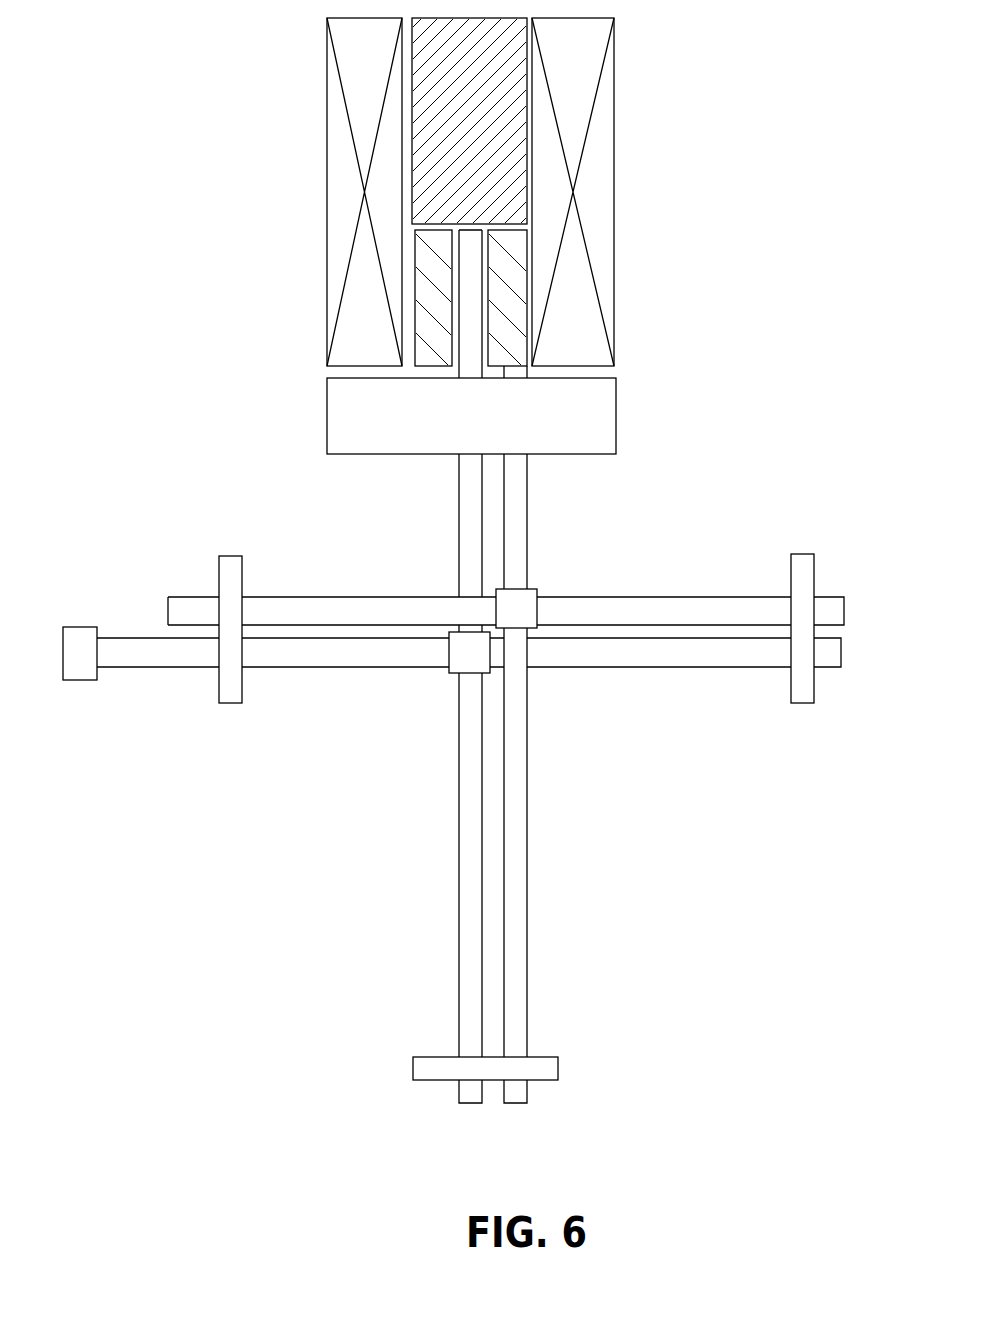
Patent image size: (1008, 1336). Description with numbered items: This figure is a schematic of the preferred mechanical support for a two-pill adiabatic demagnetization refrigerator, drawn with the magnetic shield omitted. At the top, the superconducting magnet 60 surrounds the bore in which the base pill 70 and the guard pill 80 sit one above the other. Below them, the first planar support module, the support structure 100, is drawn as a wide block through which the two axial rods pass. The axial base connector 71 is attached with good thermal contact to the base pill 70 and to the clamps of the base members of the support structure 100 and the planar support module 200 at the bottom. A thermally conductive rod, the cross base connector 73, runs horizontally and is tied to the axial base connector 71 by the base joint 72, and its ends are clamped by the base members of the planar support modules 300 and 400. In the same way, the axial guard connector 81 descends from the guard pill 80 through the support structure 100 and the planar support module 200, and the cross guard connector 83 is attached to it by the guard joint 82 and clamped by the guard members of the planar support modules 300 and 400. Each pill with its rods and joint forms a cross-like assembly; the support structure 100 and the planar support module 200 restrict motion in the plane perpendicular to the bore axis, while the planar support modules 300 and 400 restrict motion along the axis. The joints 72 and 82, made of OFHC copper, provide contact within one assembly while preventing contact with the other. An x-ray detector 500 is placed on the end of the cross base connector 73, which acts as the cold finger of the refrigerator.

The superconducting magnet 60 is at (588, 95).
The base pill 70 is at (486, 133).
The guard pill 80 is at (521, 290).
The support structure 100 is at (497, 421).
The axial base connector 71 is at (470, 529).
The axial guard connector 81 is at (522, 538).
The base joint 72 is at (447, 667).
The guard joint 82 is at (540, 595).
The cross base connector 73 is at (265, 656).
The cross guard connector 83 is at (323, 612).
The planar support module 200 is at (558, 1063).
The planar support module 300 is at (219, 568).
The planar support module 400 is at (815, 575).
The x-ray detector 500 is at (78, 667).